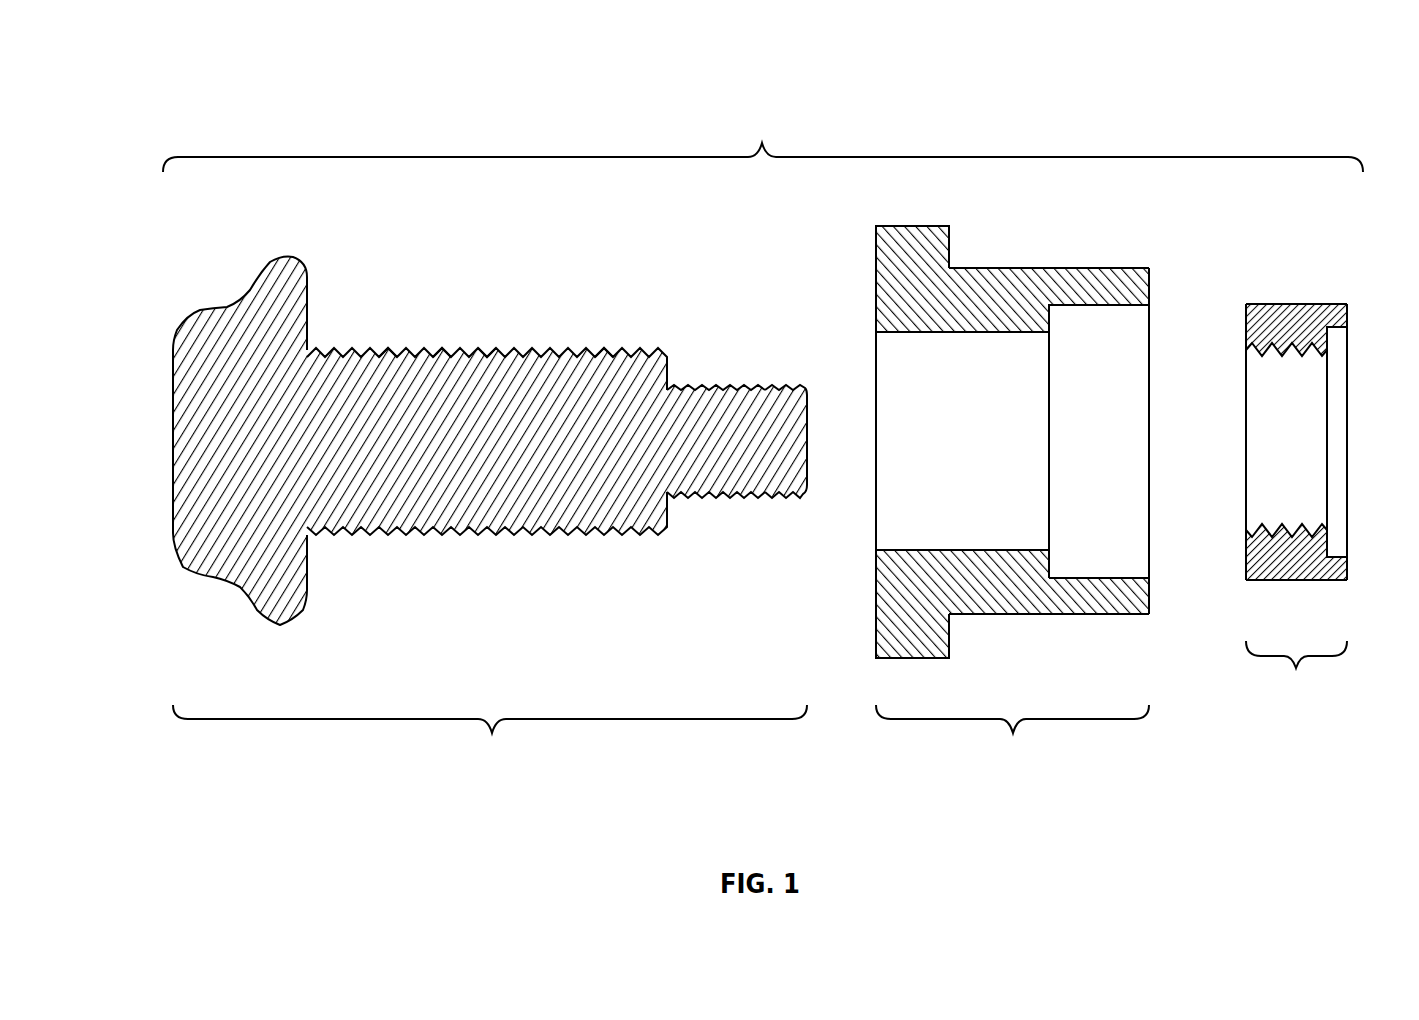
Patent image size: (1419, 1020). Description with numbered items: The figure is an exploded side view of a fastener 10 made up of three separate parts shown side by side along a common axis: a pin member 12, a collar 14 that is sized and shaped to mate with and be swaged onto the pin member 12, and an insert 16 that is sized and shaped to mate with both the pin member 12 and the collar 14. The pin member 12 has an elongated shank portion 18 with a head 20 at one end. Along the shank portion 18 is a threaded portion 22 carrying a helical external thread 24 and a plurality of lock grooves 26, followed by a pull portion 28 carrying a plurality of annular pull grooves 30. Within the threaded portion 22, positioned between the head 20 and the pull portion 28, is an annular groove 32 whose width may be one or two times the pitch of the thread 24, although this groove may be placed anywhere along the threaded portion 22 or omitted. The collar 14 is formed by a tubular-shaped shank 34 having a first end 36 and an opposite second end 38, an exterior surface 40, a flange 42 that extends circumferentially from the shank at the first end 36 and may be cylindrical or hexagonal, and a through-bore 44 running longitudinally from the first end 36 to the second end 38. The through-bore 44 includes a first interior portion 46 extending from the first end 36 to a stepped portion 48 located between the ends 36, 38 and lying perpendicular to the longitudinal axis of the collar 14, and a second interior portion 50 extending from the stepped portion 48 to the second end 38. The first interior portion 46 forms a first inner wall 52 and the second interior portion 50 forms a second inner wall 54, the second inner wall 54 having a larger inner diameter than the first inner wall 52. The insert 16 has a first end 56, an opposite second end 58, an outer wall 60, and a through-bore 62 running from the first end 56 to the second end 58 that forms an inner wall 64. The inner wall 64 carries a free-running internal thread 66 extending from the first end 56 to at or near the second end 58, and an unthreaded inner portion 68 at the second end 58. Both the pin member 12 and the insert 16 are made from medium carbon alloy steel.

The fastener 10 is at (250, 106).
The pin member 12 is at (456, 511).
The collar 14 is at (1023, 483).
The insert 16 is at (1297, 467).
The shank portion 18 is at (516, 349).
The head 20 is at (173, 513).
The threaded portion 22 is at (396, 347).
The external thread 24 is at (450, 348).
The lock grooves 26 is at (608, 349).
The pull portion 28 is at (777, 388).
The pull grooves 30 is at (727, 388).
The annular groove 32 is at (487, 355).
The tubular-shaped shank 34 is at (985, 285).
The first end 36 is at (876, 275).
The second end 38 is at (1149, 282).
The exterior surface 40 is at (1040, 268).
The flange 42 is at (890, 645).
The through-bore 44 is at (908, 398).
The first interior portion 46 is at (892, 478).
The stepped portion 48 is at (1044, 556).
The second interior portion 50 is at (1135, 512).
The first inner wall 52 is at (1003, 548).
The second inner wall 54 is at (1090, 308).
The first end 56 is at (1246, 332).
The second end 58 is at (1348, 316).
The outer wall 60 is at (1290, 303).
The through-bore 62 is at (1300, 463).
The inner wall 64 is at (1300, 522).
The internal thread 66 is at (1310, 358).
The unthreaded inner portion 68 is at (1337, 423).